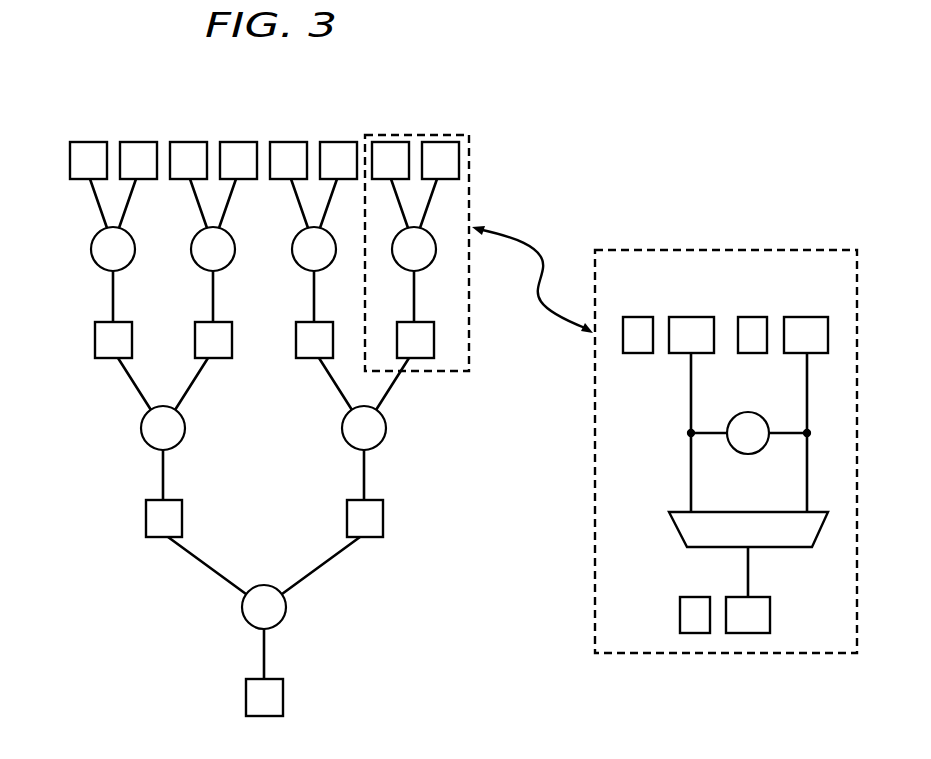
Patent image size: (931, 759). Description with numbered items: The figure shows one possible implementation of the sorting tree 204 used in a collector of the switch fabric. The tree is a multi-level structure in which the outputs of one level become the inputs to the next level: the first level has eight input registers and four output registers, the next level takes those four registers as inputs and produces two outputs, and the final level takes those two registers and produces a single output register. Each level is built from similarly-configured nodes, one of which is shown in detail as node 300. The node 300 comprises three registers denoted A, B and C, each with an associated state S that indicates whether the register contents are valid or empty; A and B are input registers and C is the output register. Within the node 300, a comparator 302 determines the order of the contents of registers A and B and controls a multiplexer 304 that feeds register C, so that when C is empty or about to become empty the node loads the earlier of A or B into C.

The sorting tree 204 is at (117, 105).
The node 300 is at (797, 250).
The comparator 302 is at (748, 454).
The multiplexer 304 is at (675, 528).